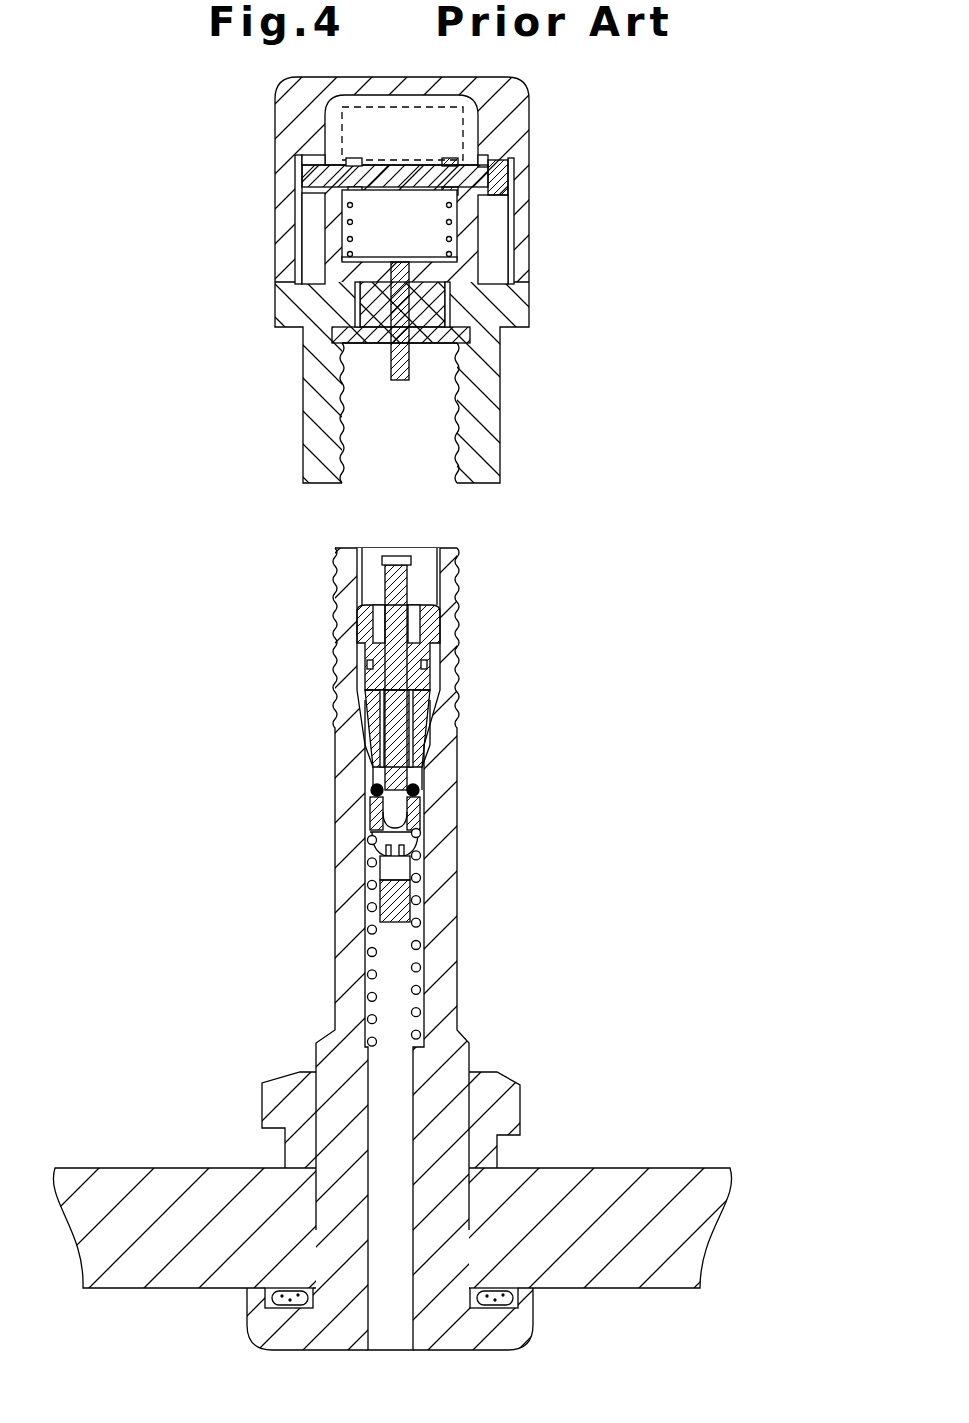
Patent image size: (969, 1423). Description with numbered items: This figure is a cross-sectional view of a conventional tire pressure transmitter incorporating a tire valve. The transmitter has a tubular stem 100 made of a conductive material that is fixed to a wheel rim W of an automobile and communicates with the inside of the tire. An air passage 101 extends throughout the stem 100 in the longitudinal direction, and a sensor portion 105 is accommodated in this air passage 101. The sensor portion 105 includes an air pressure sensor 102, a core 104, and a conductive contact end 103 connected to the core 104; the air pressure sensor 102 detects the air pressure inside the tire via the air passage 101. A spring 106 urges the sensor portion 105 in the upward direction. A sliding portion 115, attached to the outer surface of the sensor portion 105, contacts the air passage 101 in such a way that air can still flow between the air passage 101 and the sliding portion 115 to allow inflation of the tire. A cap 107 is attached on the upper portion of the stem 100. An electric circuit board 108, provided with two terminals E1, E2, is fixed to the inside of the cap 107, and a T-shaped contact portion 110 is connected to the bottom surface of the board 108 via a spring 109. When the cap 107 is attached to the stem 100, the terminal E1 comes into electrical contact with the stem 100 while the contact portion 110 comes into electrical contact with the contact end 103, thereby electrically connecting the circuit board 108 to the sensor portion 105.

The tubular stem 100 is at (449, 884).
The air passage 101 is at (425, 590).
The air pressure sensor 102 is at (390, 868).
The conductive contact end 103 is at (394, 560).
The core 104 is at (366, 750).
The sensor portion 105 is at (420, 758).
The spring 106 is at (414, 968).
The cap 107 is at (529, 82).
The electric circuit board 108 is at (397, 147).
The spring 109 is at (357, 212).
The T-shaped contact portion 110 is at (395, 366).
The sliding portion 115 is at (424, 692).
The terminal E1 is at (490, 198).
The terminal E2 is at (452, 168).
The wheel rim W is at (617, 1170).